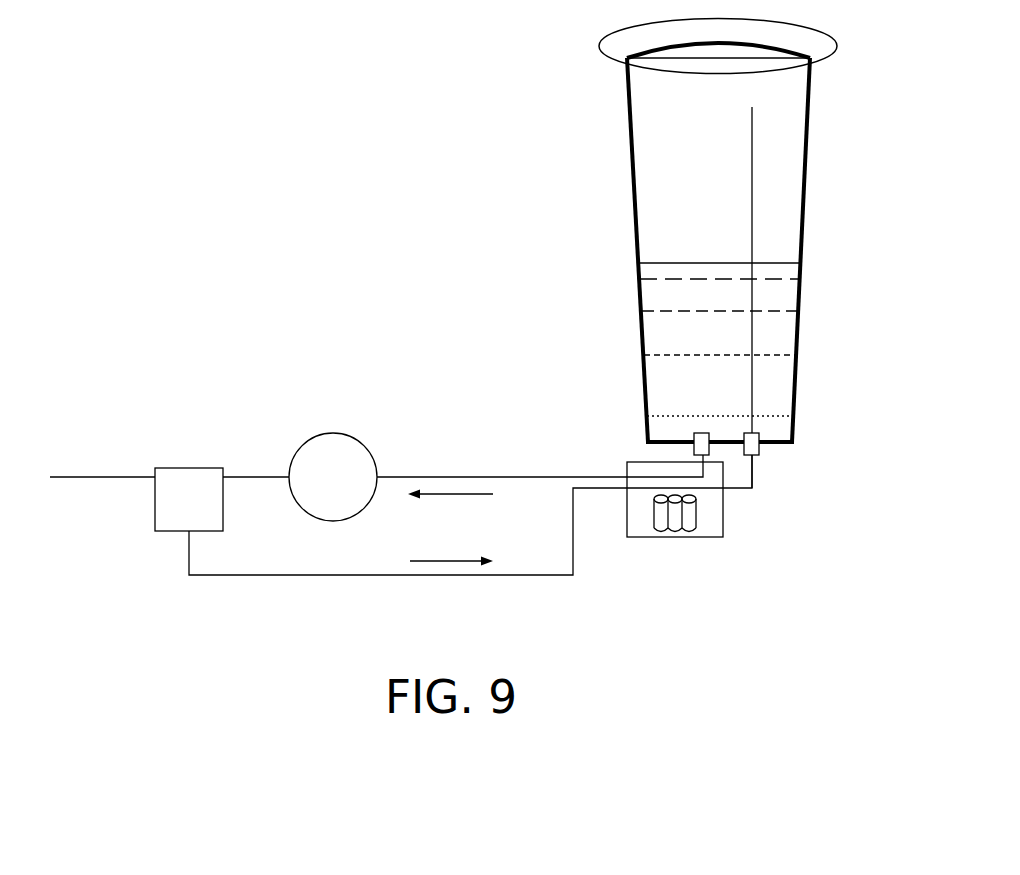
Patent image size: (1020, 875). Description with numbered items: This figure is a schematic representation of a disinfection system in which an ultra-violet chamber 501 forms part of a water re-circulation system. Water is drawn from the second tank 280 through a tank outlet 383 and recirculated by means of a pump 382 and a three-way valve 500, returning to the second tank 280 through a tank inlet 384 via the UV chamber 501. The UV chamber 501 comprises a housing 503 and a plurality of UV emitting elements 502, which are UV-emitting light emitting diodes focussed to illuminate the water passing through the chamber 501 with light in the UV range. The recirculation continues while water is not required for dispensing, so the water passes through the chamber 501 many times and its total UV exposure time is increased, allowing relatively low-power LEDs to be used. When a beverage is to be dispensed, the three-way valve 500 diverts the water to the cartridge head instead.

The second tank 280 is at (581, 84).
The pump 382 is at (363, 443).
The tank outlet 383 is at (760, 453).
The tank inlet 384 is at (692, 437).
The three-way valve 500 is at (155, 468).
The UV chamber 501 is at (739, 540).
The UV emitting elements 502 is at (672, 531).
The housing 503 is at (628, 462).